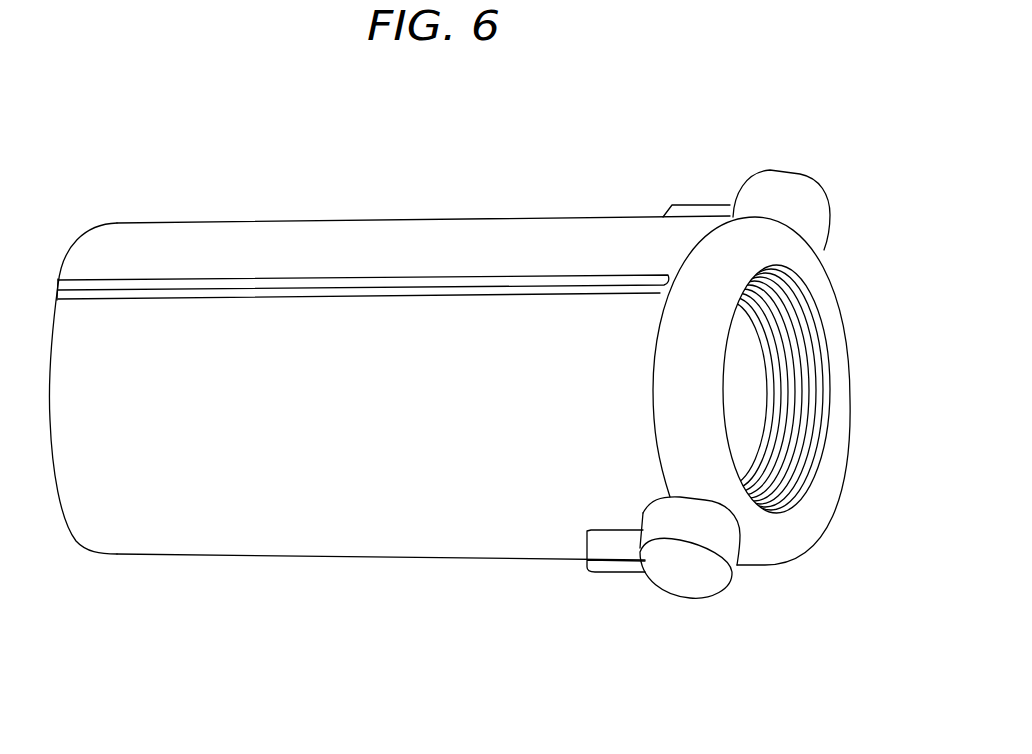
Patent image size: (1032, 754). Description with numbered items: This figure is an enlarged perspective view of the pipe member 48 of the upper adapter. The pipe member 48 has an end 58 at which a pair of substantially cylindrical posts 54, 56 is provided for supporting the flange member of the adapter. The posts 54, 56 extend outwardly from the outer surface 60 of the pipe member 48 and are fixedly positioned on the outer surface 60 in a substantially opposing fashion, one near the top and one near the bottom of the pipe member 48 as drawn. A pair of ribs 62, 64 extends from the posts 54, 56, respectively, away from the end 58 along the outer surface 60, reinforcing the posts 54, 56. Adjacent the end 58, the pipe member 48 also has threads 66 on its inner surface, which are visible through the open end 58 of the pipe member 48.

The pipe member 48 is at (336, 200).
The cylindrical post 54 is at (733, 573).
The cylindrical post 56 is at (800, 175).
The end 58 is at (607, 313).
The outer surface 60 is at (315, 527).
The rib 62 is at (615, 575).
The rib 64 is at (700, 205).
The threads 66 is at (800, 427).